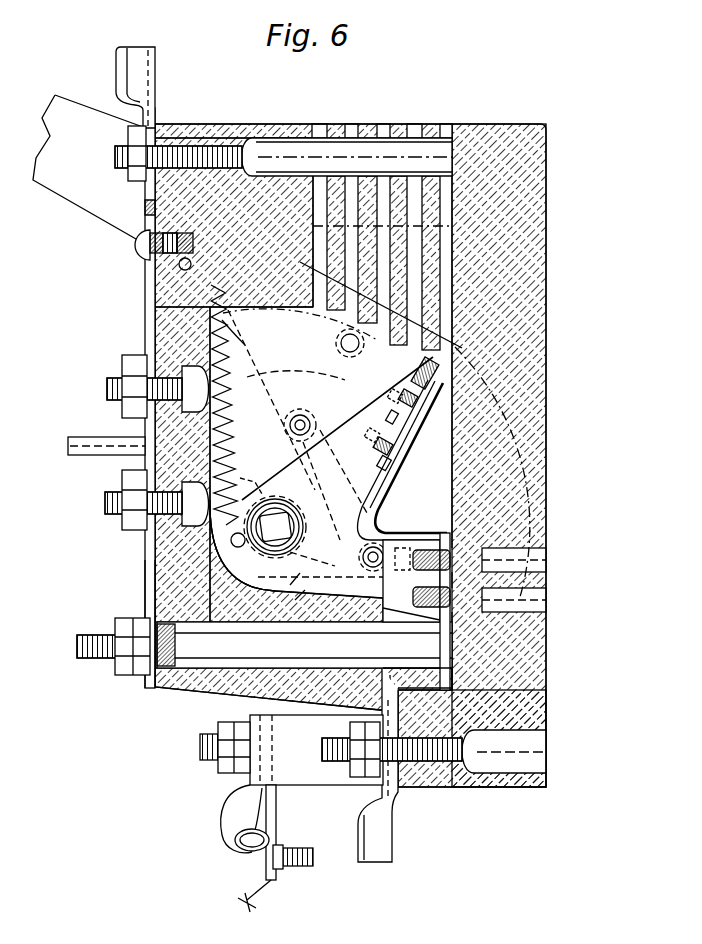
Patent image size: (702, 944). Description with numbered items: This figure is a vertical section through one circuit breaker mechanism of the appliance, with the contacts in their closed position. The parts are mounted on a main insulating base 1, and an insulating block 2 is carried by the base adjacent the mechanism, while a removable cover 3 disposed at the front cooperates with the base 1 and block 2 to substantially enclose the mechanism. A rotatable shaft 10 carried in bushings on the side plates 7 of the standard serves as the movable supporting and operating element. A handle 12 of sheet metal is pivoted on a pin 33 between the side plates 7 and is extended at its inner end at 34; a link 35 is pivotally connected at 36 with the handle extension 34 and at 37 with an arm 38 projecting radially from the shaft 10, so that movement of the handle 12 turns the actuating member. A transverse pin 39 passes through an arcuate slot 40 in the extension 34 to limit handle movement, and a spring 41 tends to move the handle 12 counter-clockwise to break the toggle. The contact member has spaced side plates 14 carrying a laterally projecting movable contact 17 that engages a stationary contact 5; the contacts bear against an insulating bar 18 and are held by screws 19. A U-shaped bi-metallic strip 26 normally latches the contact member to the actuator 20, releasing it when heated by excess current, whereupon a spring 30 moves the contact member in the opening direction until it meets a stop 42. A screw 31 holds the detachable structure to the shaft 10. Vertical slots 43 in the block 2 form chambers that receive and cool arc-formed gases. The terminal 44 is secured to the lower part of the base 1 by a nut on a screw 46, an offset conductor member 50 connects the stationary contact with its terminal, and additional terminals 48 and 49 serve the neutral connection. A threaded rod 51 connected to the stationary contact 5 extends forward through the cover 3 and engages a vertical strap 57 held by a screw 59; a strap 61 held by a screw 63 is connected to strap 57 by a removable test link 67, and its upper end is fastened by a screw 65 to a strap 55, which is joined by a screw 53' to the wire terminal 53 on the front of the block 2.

The main insulating base 1 is at (518, 126).
The block 2 is at (290, 135).
The removable cover 3 is at (158, 574).
The stationary contact 5 is at (405, 433).
The side plate 7 is at (225, 452).
The rotatable shaft 10 is at (277, 512).
The handle 12 is at (63, 188).
The side plate 14 is at (386, 380).
The movable contact 17 is at (378, 463).
The insulating bar 18 is at (386, 417).
The screw 19 is at (390, 397).
The actuator 20 is at (419, 581).
The bi-metallic strip 26 is at (452, 505).
The spring 30 is at (262, 580).
The screw 31 is at (250, 474).
The pin 33 is at (234, 238).
The handle extension 34 is at (271, 400).
The link 35 is at (335, 485).
The pivot connection 36 is at (303, 423).
The pivot connection 37 is at (370, 553).
The arm 38 is at (303, 548).
The transverse pin 39 is at (343, 338).
The arcuate slot 40 is at (288, 362).
The spring 41 is at (218, 390).
The stop 42 is at (245, 345).
The vertical slot 43 is at (417, 292).
The terminal 44 is at (389, 842).
The screw 46 is at (324, 758).
The terminal 48 is at (222, 822).
The terminal 49 is at (250, 846).
The offset conductor member 50 is at (437, 628).
The threaded rod 51 is at (264, 646).
The wire terminal 53 is at (112, 87).
The screw 53' is at (178, 134).
The vertical strap 55 is at (152, 205).
The vertical strap 57 is at (156, 600).
The screw 59 is at (105, 503).
The vertical strap 61 is at (148, 313).
The screw 63 is at (107, 390).
The screw 65 is at (138, 258).
The test link 67 is at (140, 466).